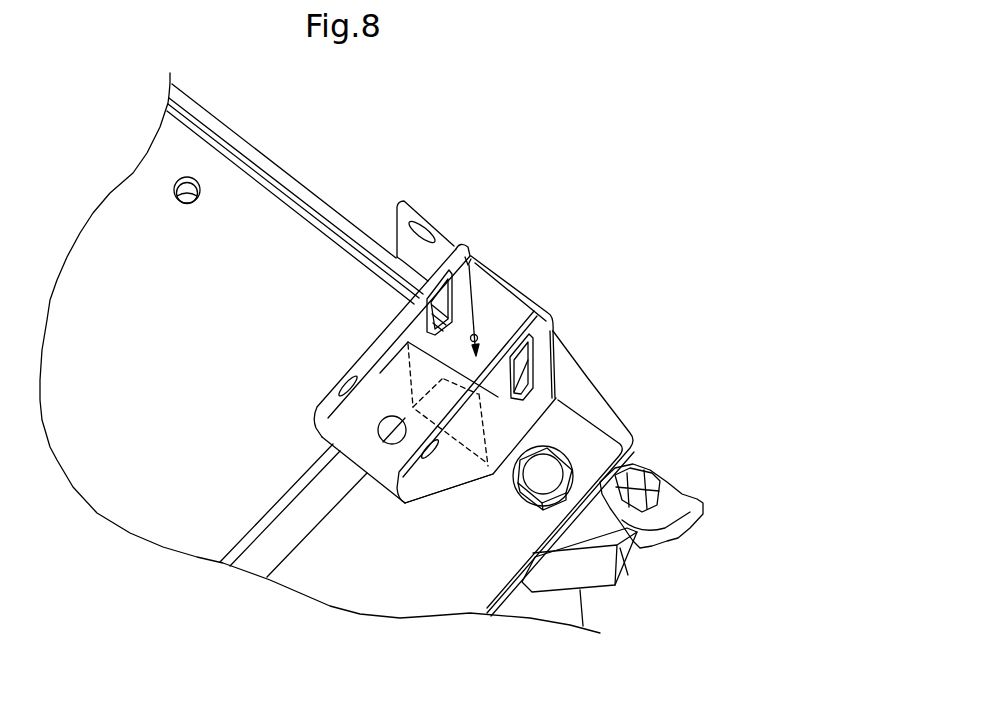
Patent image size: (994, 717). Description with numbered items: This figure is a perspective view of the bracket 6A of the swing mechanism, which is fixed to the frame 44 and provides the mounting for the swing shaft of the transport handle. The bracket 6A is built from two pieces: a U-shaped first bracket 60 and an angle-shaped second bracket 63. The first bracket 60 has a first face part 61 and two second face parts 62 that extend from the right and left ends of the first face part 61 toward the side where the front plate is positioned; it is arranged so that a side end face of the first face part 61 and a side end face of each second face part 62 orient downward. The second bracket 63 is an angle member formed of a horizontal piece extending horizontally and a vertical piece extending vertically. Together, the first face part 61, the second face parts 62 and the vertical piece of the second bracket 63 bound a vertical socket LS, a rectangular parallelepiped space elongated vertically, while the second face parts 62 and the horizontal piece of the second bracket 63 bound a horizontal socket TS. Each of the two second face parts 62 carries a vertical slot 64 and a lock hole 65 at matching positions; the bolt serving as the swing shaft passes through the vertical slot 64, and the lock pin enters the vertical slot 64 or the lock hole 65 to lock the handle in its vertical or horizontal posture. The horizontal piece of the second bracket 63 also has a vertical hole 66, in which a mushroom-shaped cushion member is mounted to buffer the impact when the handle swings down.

The bracket 6A is at (307, 340).
The frame 44 is at (282, 532).
The first bracket 60 is at (441, 377).
The first face part 61 is at (527, 298).
The second face parts 62 is at (376, 339).
The second bracket 63 is at (342, 455).
The vertical slot 64 is at (520, 361).
The lock hole 65 is at (413, 499).
The vertical hole 66 is at (388, 445).
The horizontal socket TS is at (378, 401).
The vertical socket LS is at (471, 260).